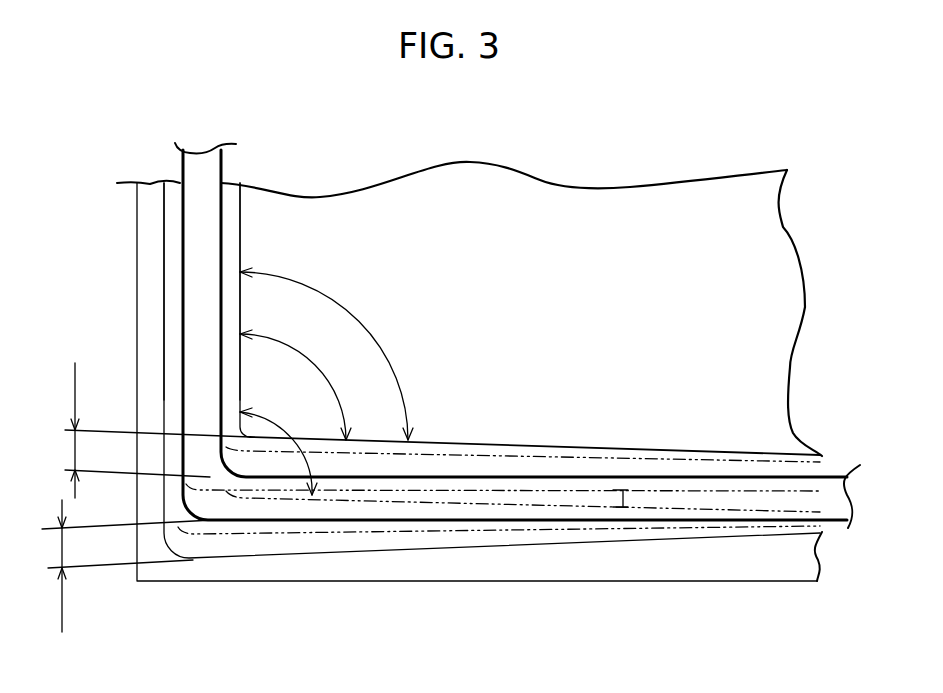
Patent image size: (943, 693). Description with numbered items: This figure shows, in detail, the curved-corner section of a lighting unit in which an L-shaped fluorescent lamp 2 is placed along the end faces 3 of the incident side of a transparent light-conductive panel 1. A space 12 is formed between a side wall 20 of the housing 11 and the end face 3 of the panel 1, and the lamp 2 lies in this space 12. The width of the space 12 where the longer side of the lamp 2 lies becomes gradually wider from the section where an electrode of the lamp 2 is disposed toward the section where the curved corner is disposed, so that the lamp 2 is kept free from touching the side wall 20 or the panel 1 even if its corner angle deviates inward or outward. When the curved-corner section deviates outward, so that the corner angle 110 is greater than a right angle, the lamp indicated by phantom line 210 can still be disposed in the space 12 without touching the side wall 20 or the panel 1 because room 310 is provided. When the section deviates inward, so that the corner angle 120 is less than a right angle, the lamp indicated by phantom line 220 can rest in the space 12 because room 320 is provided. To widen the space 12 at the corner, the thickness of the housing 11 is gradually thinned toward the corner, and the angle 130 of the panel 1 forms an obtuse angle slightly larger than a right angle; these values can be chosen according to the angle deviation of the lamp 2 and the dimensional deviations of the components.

The light-conductive panel 1 is at (758, 272).
The L-shaped fluorescent lamp 2 is at (202, 172).
The end face 3 is at (240, 228).
The housing 11 is at (150, 330).
The space 12 is at (232, 248).
The side wall 20 is at (163, 302).
The corner angle 110 is at (297, 385).
The corner angle 120 is at (283, 447).
The angle of the panel 130 is at (326, 354).
The phantom line 210 is at (623, 490).
The phantom line 220 is at (333, 533).
The room 310 is at (147, 430).
The room 320 is at (121, 568).